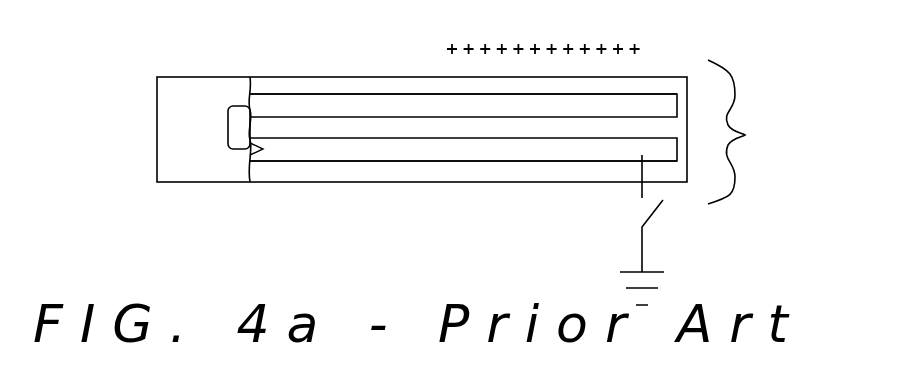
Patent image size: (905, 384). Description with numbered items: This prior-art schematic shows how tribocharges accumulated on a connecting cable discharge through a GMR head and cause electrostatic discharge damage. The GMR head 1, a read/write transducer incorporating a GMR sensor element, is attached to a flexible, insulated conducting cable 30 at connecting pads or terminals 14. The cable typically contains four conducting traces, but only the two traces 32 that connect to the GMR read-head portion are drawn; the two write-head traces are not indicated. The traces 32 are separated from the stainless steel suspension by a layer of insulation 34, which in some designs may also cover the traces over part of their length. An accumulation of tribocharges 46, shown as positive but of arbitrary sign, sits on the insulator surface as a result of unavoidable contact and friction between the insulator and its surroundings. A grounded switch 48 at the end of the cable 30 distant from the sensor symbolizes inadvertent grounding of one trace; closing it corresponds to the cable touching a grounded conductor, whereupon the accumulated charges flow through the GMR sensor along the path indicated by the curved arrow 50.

The GMR head 1 is at (181, 97).
The terminals 14 is at (248, 78).
The insulation 34 is at (341, 85).
The traces 32 is at (661, 108).
The tribocharges 46 is at (534, 50).
The curved arrow 50 is at (228, 131).
The grounded switch 48 is at (642, 247).
The conducting cable 30 is at (744, 132).